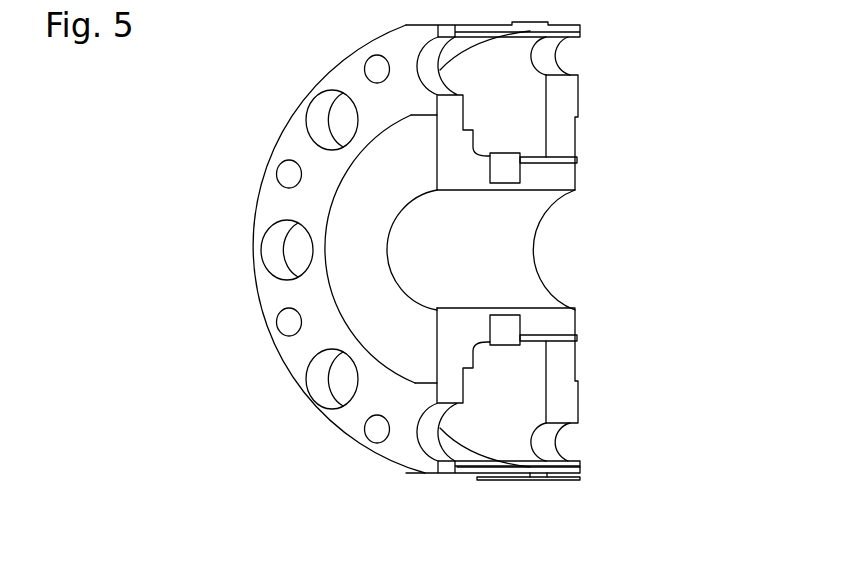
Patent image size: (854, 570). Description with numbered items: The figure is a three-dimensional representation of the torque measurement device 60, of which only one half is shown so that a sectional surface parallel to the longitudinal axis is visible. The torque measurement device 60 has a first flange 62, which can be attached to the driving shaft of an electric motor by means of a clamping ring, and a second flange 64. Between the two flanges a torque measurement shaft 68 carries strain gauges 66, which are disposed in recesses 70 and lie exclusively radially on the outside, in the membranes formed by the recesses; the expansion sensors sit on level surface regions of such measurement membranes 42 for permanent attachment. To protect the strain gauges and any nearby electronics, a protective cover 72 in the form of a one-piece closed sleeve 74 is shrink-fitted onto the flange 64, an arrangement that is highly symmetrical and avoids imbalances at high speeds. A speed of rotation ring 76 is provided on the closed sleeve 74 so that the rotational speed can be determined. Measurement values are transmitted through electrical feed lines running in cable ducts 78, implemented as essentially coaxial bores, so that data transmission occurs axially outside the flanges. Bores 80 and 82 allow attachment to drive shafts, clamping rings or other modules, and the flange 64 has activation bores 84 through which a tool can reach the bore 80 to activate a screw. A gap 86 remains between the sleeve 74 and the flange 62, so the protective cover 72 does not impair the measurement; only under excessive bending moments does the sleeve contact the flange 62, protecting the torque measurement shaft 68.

The torque measurement device 60 is at (250, 103).
The first flange 62 is at (563, 103).
The second flange 64 is at (287, 353).
The measurement membrane 42 is at (500, 276).
The strain gauge 66 is at (505, 185).
The torque measurement shaft 68 is at (508, 320).
The recess 70 is at (508, 342).
The protective cover 72 is at (477, 471).
The closed sleeve 74 is at (565, 475).
The speed of rotation ring 76 is at (544, 478).
The cable duct 78 is at (530, 160).
The bore 80 is at (553, 50).
The bore 82 is at (288, 170).
The activation bore 84 is at (290, 252).
The gap 86 is at (597, 467).